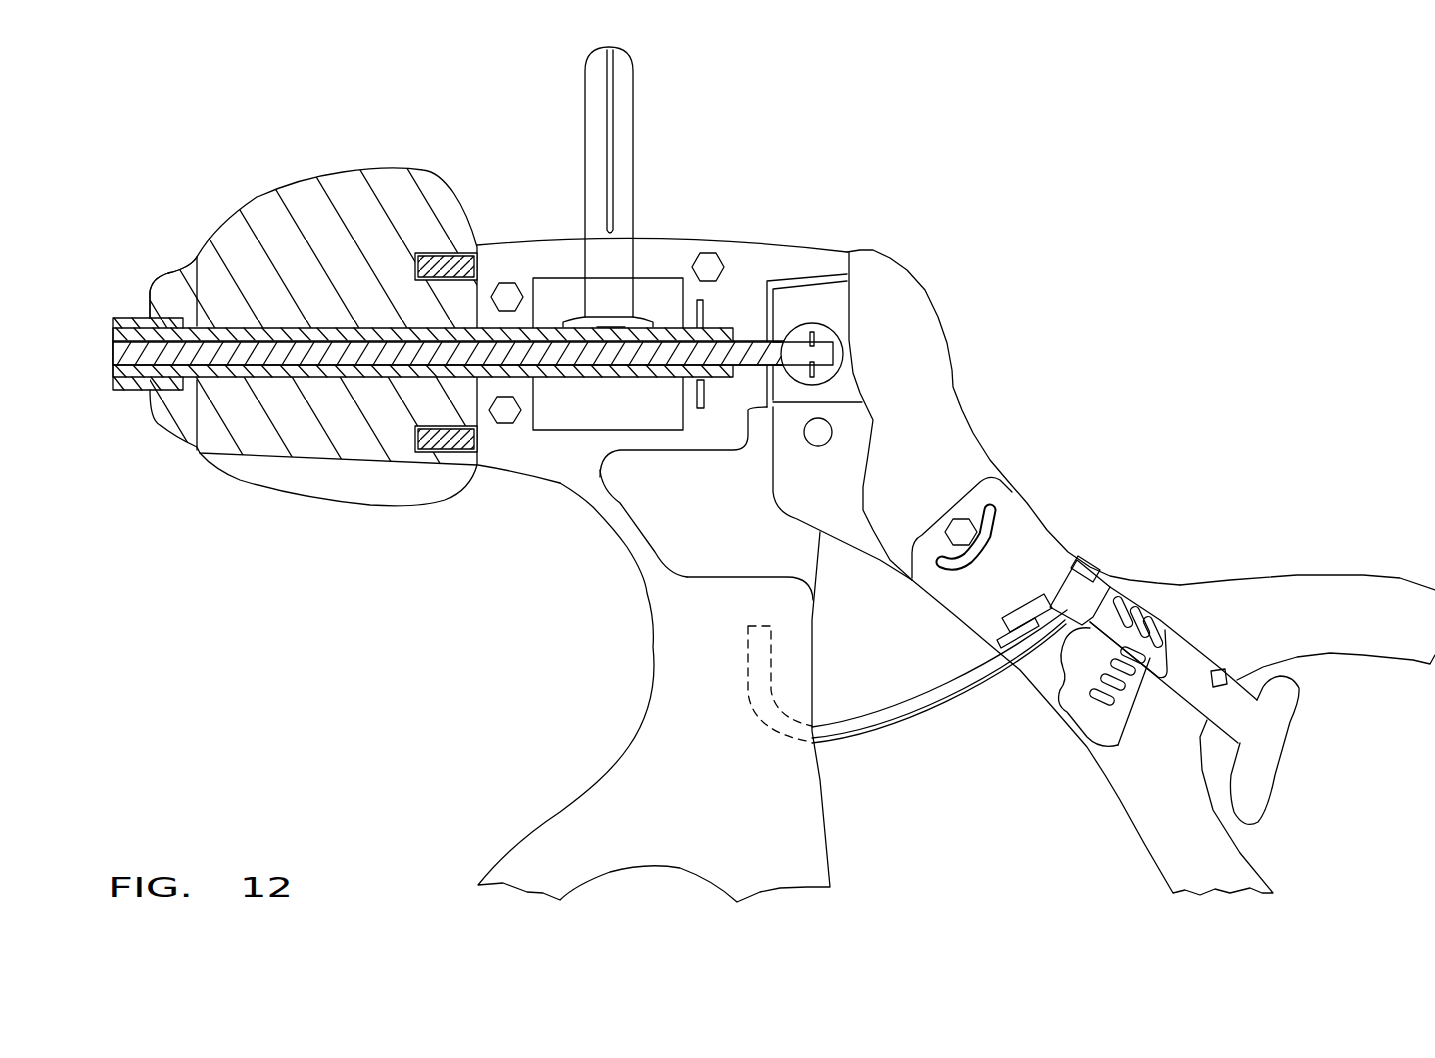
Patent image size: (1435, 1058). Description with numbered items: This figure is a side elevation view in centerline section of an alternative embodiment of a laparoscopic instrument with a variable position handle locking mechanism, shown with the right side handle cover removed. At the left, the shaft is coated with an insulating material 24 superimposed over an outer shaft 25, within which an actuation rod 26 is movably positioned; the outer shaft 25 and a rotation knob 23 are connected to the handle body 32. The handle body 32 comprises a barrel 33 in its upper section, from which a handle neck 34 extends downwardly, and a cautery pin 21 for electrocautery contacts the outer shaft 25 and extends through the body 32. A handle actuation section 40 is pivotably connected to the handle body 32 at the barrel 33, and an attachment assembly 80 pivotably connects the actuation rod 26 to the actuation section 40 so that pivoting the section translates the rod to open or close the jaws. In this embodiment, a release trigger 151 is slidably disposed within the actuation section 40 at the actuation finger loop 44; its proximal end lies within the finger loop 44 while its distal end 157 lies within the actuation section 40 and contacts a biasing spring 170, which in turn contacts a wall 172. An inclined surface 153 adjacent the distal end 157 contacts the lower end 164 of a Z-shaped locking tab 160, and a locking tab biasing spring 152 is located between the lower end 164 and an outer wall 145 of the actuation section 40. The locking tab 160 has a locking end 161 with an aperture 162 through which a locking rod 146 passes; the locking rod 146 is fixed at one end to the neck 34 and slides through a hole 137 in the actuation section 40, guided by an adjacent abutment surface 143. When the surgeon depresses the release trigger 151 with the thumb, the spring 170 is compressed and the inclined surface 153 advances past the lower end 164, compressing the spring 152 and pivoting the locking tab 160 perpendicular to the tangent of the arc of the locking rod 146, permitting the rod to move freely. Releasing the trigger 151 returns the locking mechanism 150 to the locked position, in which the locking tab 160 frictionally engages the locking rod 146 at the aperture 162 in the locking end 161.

The cautery pin 21 is at (623, 80).
The rotation knob 23 is at (272, 215).
The insulating material 24 is at (125, 392).
The outer shaft 25 is at (190, 280).
The actuation rod 26 is at (196, 435).
The handle body 32 is at (753, 263).
The barrel 33 is at (549, 449).
The handle neck 34 is at (654, 655).
The handle actuation section 40 is at (942, 390).
The actuation finger loop 44 is at (1345, 593).
The attachment assembly 80 is at (825, 345).
The hole 137 is at (1003, 660).
The abutment surface 143 is at (1050, 590).
The outer wall 145 is at (1107, 775).
The locking rod 146 is at (887, 733).
The locking mechanism 150 is at (1150, 718).
The release trigger 151 is at (1265, 752).
The locking tab biasing spring 152 is at (1067, 720).
The inclined surface 153 is at (1182, 690).
The distal end 157 is at (1143, 615).
The locking tab 160 is at (1067, 700).
The locking end 161 is at (1003, 612).
The aperture 162 is at (1050, 603).
The lower end 164 is at (1163, 677).
The biasing spring 170 is at (1133, 612).
The wall 172 is at (1127, 597).